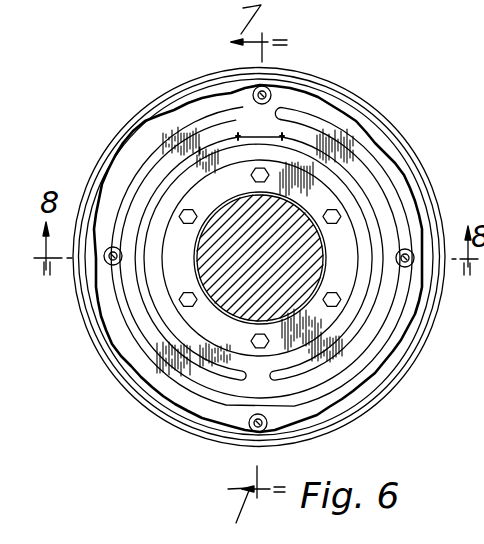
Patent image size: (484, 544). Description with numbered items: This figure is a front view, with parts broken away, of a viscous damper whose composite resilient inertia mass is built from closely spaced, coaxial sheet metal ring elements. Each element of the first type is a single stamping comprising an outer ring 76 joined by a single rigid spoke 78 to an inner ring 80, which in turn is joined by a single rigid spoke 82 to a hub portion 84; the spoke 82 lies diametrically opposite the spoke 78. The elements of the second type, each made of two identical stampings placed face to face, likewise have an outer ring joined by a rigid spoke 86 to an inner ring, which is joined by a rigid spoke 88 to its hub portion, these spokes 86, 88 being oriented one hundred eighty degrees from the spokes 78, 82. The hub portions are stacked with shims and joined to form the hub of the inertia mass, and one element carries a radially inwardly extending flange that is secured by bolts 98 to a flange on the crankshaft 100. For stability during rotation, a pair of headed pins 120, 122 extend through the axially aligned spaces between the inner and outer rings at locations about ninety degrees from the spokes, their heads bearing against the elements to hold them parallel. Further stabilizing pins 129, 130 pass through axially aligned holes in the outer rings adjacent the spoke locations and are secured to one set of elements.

The outer ring 76 is at (275, 103).
The rigid spoke 78 is at (286, 111).
The inner ring 80 is at (342, 136).
The rigid spoke 82 is at (258, 378).
The hub portion 84 is at (236, 339).
The rigid spoke 86 is at (276, 385).
The rigid spoke 88 is at (250, 134).
The bolt 98 is at (250, 177).
The crankshaft 100 is at (313, 265).
The headed pin 120 is at (107, 262).
The headed pin 122 is at (411, 264).
The pin 129 is at (255, 432).
The pin 130 is at (269, 87).